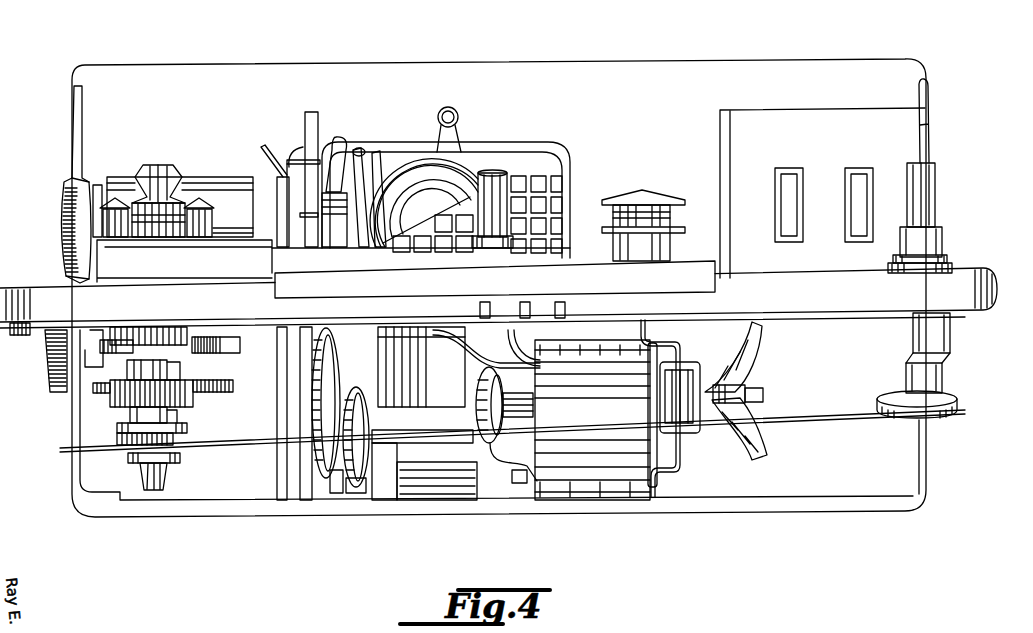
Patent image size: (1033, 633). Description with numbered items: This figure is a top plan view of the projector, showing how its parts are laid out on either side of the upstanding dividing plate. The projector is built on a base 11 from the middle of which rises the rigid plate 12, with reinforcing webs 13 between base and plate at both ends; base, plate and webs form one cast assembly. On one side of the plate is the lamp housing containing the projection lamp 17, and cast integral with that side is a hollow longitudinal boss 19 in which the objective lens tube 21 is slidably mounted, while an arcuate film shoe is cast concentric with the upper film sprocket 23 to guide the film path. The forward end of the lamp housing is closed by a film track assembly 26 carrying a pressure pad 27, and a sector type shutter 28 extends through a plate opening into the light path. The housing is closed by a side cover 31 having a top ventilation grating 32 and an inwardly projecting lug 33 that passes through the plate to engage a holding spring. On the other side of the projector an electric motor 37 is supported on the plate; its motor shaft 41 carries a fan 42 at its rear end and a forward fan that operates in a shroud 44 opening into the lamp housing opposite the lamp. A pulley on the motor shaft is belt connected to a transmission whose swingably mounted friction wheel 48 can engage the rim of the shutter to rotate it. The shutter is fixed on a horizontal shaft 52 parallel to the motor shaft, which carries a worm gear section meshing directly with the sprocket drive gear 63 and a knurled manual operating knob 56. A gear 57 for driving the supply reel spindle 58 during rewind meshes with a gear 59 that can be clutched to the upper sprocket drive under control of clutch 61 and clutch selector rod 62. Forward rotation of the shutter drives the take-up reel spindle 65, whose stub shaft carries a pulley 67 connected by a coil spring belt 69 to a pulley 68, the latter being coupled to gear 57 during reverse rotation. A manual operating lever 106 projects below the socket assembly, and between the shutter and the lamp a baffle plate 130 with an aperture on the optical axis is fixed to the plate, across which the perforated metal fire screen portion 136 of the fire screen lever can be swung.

The base 11 is at (907, 72).
The rigid plate 12 is at (970, 270).
The reinforcing webs 13 is at (930, 127).
The projection lamp 17 is at (454, 170).
The hollow longitudinal boss 19 is at (205, 187).
The objective lens tube 21 is at (60, 216).
The upper film sprocket 23 is at (148, 193).
The film track assembly 26 is at (287, 158).
The pressure pad 27 is at (276, 174).
The sector type shutter 28 is at (333, 188).
The side cover 31 is at (552, 144).
The top ventilation grating 32 is at (557, 185).
The inwardly projecting lug 33 is at (516, 333).
The electric motor 37 is at (628, 498).
The motor shaft 41 is at (524, 412).
The fan 42 is at (757, 460).
The shroud 44 is at (455, 500).
The friction wheel 48 is at (348, 492).
The horizontal shaft 52 is at (298, 335).
The knurled manual operating knob 56 is at (50, 372).
The gear 57 is at (195, 405).
The supply reel spindle 58 is at (491, 178).
The gear 59 is at (233, 388).
The clutch 61 is at (177, 468).
The clutch selector rod 62 is at (160, 190).
The sprocket drive gear 63 is at (212, 342).
The take-up reel spindle 65 is at (930, 193).
The pulley 67 is at (955, 412).
The pulley 68 is at (140, 432).
The coil spring belt 69 is at (819, 418).
The manual operating lever 106 is at (458, 110).
The baffle plate 130 is at (366, 190).
The perforated metal fire screen portion 136 is at (388, 192).